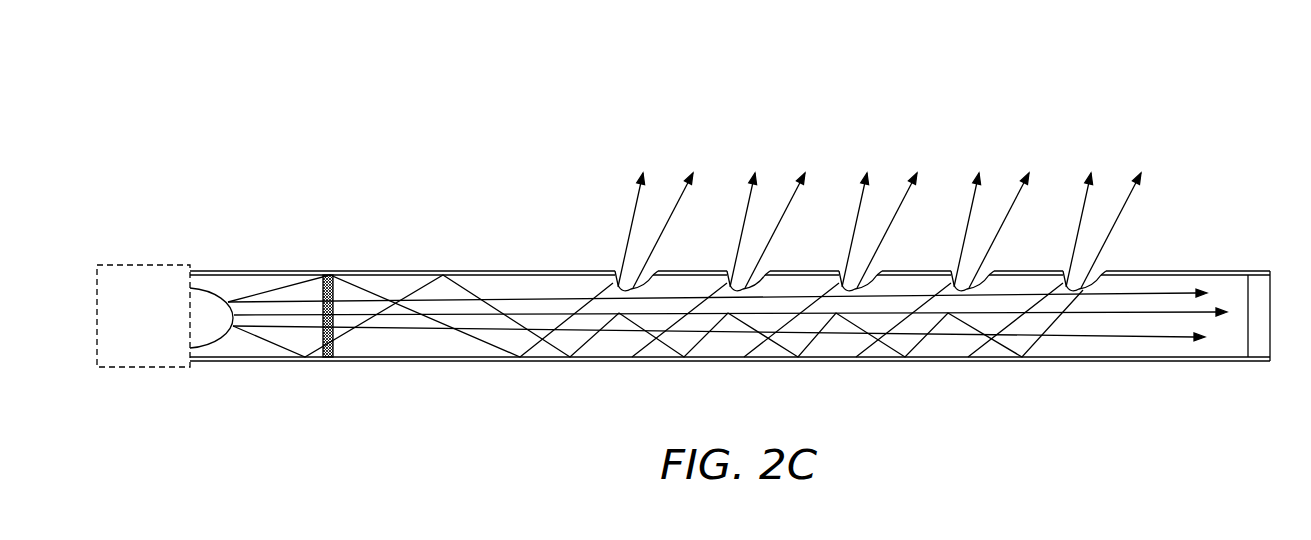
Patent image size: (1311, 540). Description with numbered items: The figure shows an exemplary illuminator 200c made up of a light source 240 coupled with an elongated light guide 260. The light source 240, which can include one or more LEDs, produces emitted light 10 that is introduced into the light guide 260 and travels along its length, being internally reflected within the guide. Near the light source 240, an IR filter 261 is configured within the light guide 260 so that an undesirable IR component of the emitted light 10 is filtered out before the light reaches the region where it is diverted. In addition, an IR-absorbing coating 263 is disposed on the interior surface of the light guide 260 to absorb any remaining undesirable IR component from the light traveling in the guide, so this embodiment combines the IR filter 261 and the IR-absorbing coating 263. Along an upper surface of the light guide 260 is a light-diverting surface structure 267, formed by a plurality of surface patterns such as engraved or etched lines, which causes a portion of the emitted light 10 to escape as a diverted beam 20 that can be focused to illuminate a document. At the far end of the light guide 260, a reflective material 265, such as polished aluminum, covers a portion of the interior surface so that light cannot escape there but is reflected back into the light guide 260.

The illuminator 200c is at (978, 72).
The light source 240 is at (143, 316).
The emitted light 10 is at (260, 311).
The IR filter 261 is at (328, 273).
The IR-absorbing coating 263 is at (380, 270).
The light-diverting surface structure 267 is at (654, 275).
The diverted beam 20 is at (1160, 155).
The reflective material 265 is at (1257, 283).
The light guide 260 is at (1272, 384).